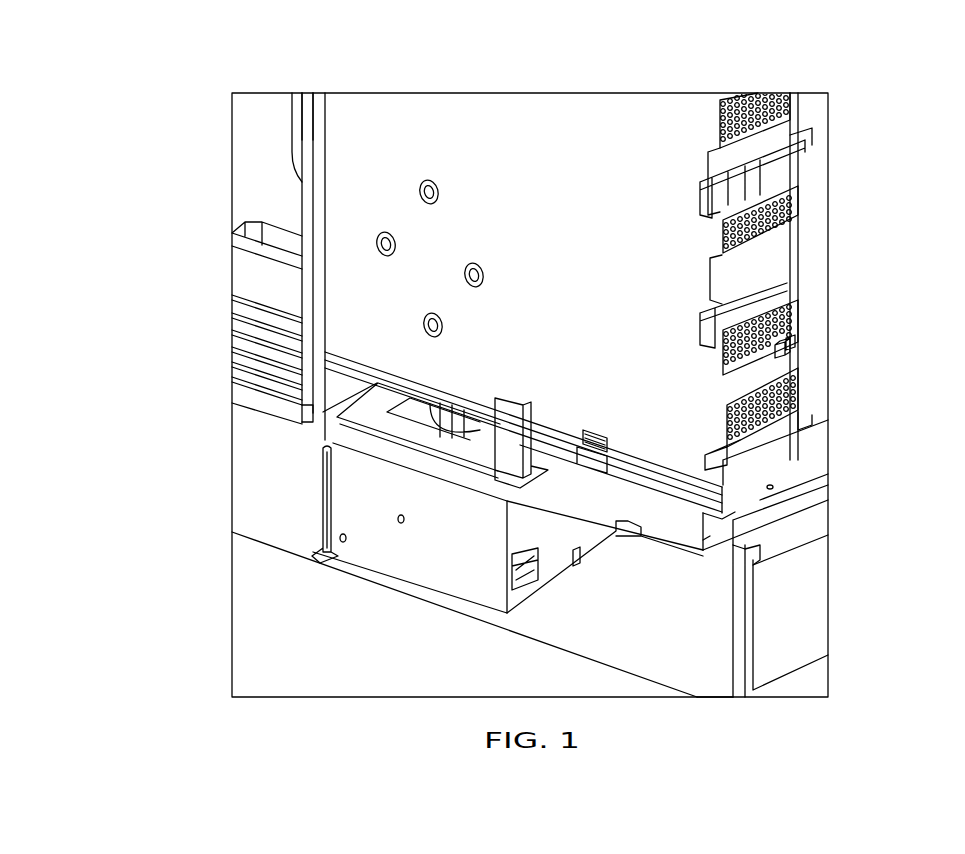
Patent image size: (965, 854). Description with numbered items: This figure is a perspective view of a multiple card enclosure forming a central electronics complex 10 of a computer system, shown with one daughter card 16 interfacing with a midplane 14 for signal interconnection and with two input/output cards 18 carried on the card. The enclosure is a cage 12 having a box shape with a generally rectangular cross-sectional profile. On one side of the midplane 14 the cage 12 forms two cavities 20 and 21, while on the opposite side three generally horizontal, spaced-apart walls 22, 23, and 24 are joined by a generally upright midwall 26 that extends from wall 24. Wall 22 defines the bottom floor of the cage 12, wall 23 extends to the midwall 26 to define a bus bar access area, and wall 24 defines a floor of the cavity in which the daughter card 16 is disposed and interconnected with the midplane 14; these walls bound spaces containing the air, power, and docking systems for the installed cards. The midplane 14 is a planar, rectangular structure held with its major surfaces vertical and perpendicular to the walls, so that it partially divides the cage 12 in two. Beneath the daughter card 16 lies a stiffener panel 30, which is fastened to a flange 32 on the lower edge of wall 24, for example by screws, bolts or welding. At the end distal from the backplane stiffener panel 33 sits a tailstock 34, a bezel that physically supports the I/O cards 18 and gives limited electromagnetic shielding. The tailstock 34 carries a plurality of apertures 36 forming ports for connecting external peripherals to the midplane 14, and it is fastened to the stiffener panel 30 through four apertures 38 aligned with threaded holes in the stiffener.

The central electronics complex 10 is at (888, 90).
The cage 12 is at (820, 493).
The midplane 14 is at (320, 92).
The daughter card 16 is at (527, 92).
The I/O card 18 is at (800, 160).
The cavity 20 is at (221, 224).
The cavity 21 is at (190, 466).
The wall 22 is at (715, 683).
The wall 23 is at (620, 535).
The wall 24 is at (703, 513).
The midwall 26 is at (312, 491).
The stiffener panel 30 is at (582, 118).
The flange 32 is at (762, 520).
The backplane stiffener panel 33 is at (305, 92).
The tailstock 34 is at (808, 103).
The apertures 36 is at (780, 232).
The apertures 38 is at (700, 213).